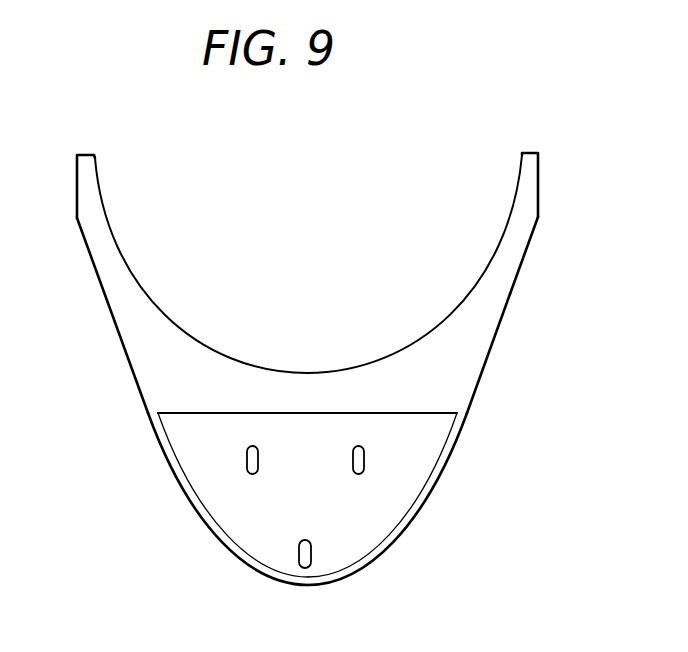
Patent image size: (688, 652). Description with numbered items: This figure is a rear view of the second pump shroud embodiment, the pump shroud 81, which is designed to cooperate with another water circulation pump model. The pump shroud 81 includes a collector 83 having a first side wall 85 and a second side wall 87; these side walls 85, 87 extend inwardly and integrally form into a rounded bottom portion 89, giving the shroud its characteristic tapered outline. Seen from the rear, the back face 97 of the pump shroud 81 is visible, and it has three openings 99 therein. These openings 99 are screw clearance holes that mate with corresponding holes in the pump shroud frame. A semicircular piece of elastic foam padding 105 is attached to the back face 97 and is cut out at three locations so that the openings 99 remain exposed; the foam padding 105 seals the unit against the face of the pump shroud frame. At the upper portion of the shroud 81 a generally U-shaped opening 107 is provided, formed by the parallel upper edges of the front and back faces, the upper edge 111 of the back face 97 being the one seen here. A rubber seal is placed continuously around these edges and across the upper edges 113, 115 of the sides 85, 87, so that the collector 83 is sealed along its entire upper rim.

The pump shroud 81 is at (533, 325).
The collector 83 is at (512, 280).
The first side wall 85 is at (132, 372).
The second side wall 87 is at (478, 392).
The rounded bottom portion 89 is at (436, 507).
The back face 97 is at (200, 390).
The openings 99 is at (352, 467).
The elastic foam padding 105 is at (215, 505).
The U-shaped opening 107 is at (320, 227).
The upper edge of back face 111 is at (303, 372).
The upper edge of first side 113 is at (97, 170).
The upper edge of second side 115 is at (517, 157).